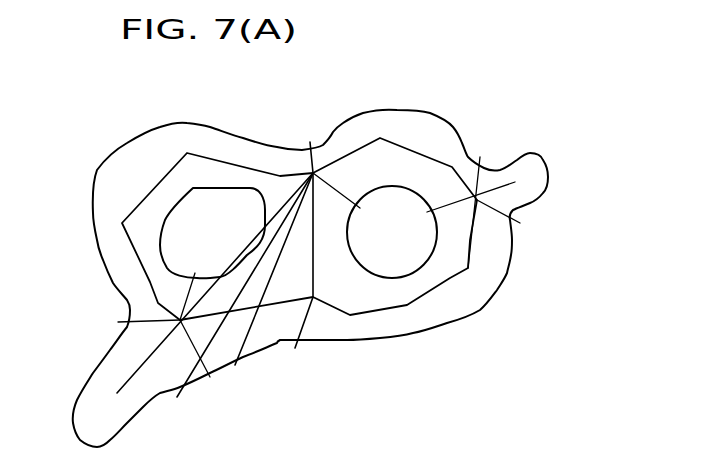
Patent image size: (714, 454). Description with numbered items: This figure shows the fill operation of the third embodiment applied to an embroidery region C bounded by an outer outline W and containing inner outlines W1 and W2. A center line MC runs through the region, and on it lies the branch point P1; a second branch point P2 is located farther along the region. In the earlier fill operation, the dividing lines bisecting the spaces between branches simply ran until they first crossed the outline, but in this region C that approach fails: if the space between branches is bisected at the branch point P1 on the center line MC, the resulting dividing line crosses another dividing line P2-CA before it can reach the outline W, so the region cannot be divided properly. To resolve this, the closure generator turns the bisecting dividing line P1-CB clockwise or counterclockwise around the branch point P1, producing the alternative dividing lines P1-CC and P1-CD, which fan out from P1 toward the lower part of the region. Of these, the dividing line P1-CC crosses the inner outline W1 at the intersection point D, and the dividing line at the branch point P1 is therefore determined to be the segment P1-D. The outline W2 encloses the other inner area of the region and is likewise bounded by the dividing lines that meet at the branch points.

The outline W is at (457, 132).
The outline W1 is at (213, 188).
The second workpiece region W2 is at (395, 187).
The embroidery region C is at (493, 315).
The branch point P1 is at (313, 173).
The branch point P2 is at (313, 297).
The dividing line end point CA is at (260, 248).
The dividing line end point CB is at (239, 298).
The dividing line end point CC is at (215, 283).
The dividing line end point CD is at (246, 287).
The intersection point D is at (265, 222).
The center line MC is at (472, 222).